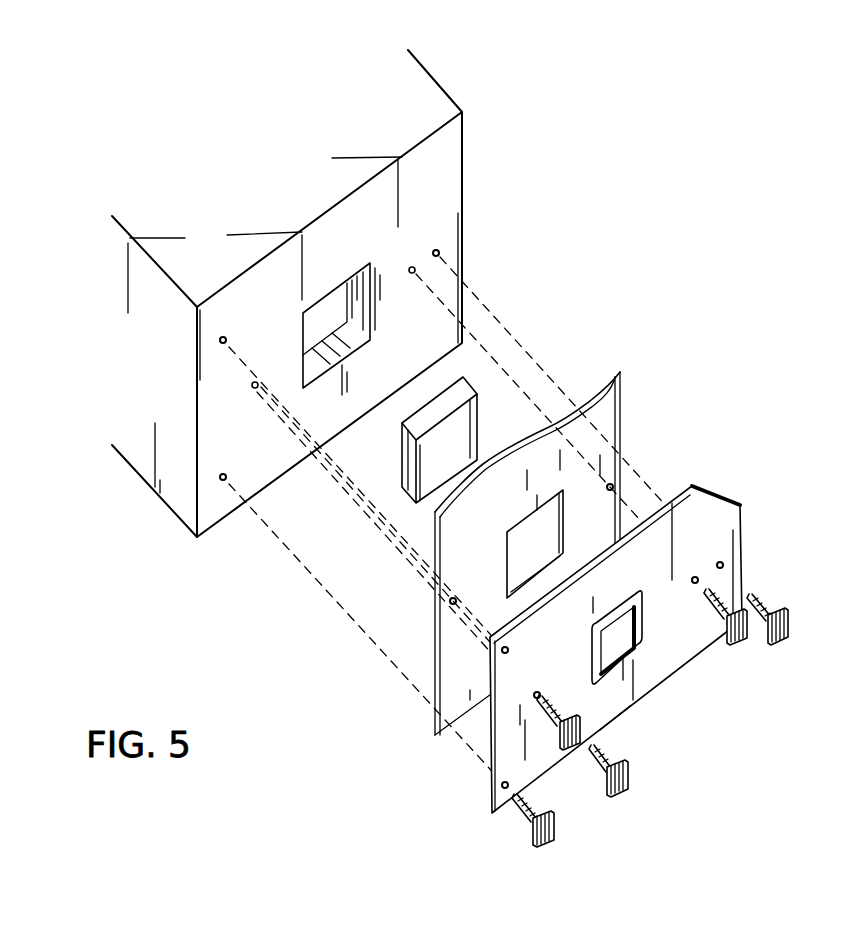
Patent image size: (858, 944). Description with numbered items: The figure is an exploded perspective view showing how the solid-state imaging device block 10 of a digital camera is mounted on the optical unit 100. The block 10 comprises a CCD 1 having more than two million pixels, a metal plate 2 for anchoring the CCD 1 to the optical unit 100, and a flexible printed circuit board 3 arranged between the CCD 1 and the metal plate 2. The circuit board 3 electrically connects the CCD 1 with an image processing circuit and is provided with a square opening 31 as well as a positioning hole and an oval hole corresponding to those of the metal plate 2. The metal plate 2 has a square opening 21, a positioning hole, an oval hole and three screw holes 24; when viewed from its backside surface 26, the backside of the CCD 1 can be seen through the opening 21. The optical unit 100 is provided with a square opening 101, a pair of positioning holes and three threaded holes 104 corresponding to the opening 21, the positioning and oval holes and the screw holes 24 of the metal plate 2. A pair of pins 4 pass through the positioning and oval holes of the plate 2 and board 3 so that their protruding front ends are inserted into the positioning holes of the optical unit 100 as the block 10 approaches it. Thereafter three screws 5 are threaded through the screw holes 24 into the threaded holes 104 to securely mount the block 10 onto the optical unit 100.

The optical unit 100 is at (420, 104).
The square opening 101 is at (340, 325).
The threaded holes 104 is at (227, 338).
The CCD 1 is at (466, 386).
The solid-state imaging device block 10 is at (646, 306).
The metal plate 2 is at (717, 517).
The flexible printed circuit board 3 is at (620, 413).
The square opening 21 is at (625, 640).
The screw holes 24 is at (502, 660).
The backside surface 26 is at (613, 707).
The square opening 31 is at (525, 552).
The pins 4 is at (740, 641).
The screws 5 is at (789, 634).